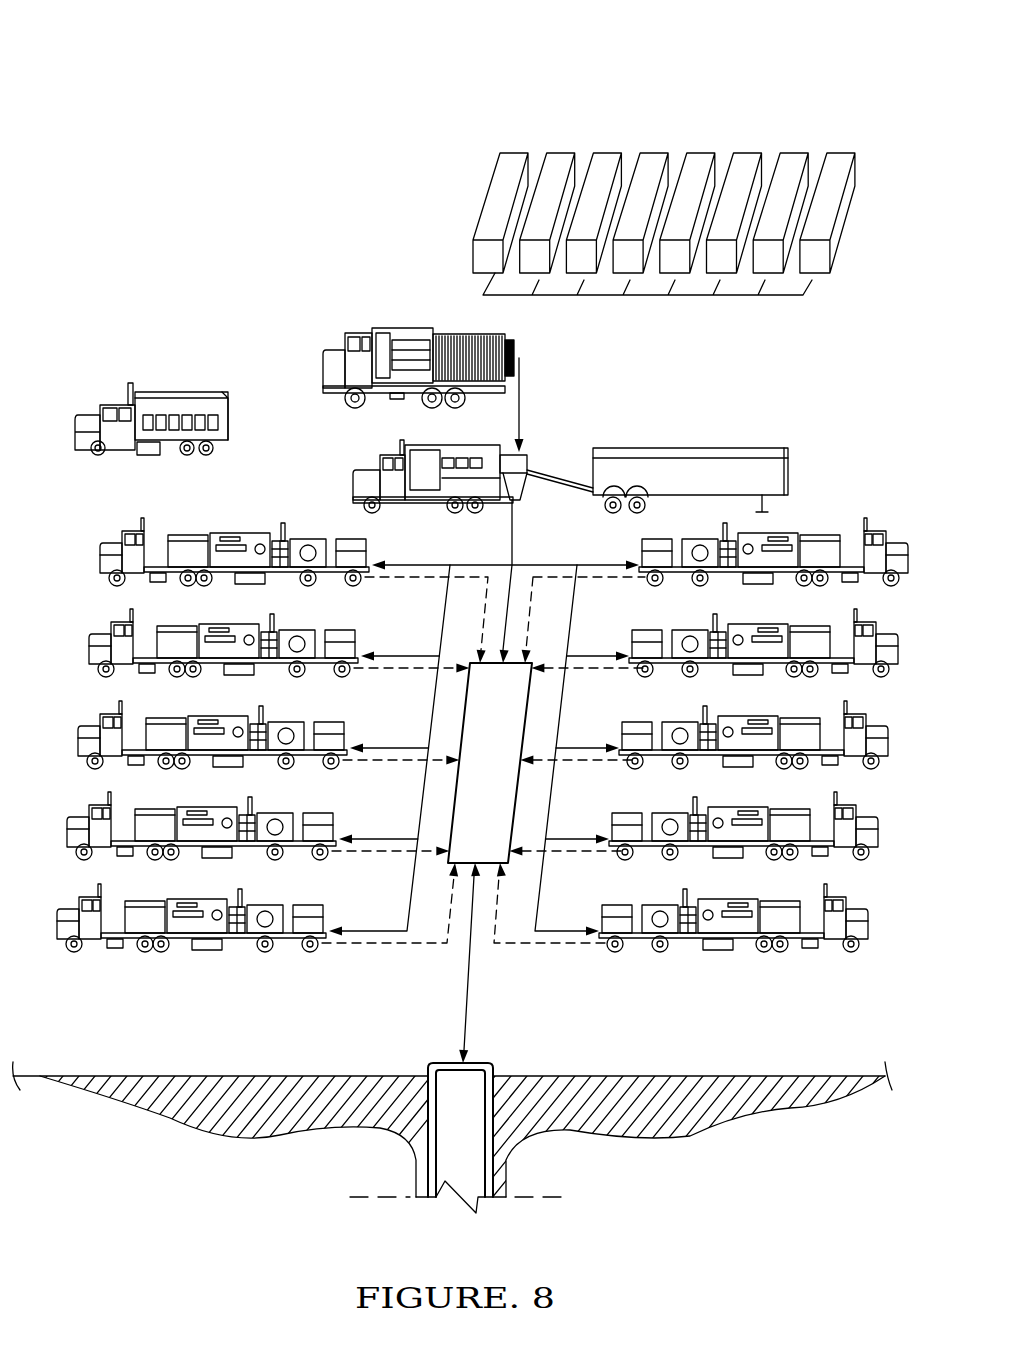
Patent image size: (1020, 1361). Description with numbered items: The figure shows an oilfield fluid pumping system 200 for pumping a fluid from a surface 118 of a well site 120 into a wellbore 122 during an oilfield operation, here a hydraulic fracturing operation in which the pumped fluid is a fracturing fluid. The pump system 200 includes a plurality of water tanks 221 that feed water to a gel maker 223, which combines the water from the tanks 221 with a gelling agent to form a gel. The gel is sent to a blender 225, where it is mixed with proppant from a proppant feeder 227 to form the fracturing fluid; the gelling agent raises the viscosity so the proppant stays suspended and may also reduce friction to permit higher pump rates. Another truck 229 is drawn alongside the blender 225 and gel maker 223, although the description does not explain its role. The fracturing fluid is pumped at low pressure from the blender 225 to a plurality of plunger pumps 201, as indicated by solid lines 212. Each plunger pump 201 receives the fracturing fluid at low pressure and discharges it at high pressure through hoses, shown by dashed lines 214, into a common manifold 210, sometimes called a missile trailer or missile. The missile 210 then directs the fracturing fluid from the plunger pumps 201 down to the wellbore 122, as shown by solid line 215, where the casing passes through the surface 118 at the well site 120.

The oilfield fluid pumping system 200 is at (770, 45).
The water tanks 221 is at (510, 152).
The gel maker 223 is at (514, 353).
The blender 225 is at (380, 465).
The proppant feeder 227 is at (692, 448).
The control/data van truck 229 is at (185, 392).
The plunger pumps 201 is at (100, 556).
The solid lines 212 is at (428, 562).
The dashed lines 214 is at (390, 577).
The common manifold 210 is at (478, 725).
The solid line 215 is at (462, 1023).
The surface 118 is at (212, 1075).
The well site 120 is at (485, 1155).
The wellbore 122 is at (450, 1173).